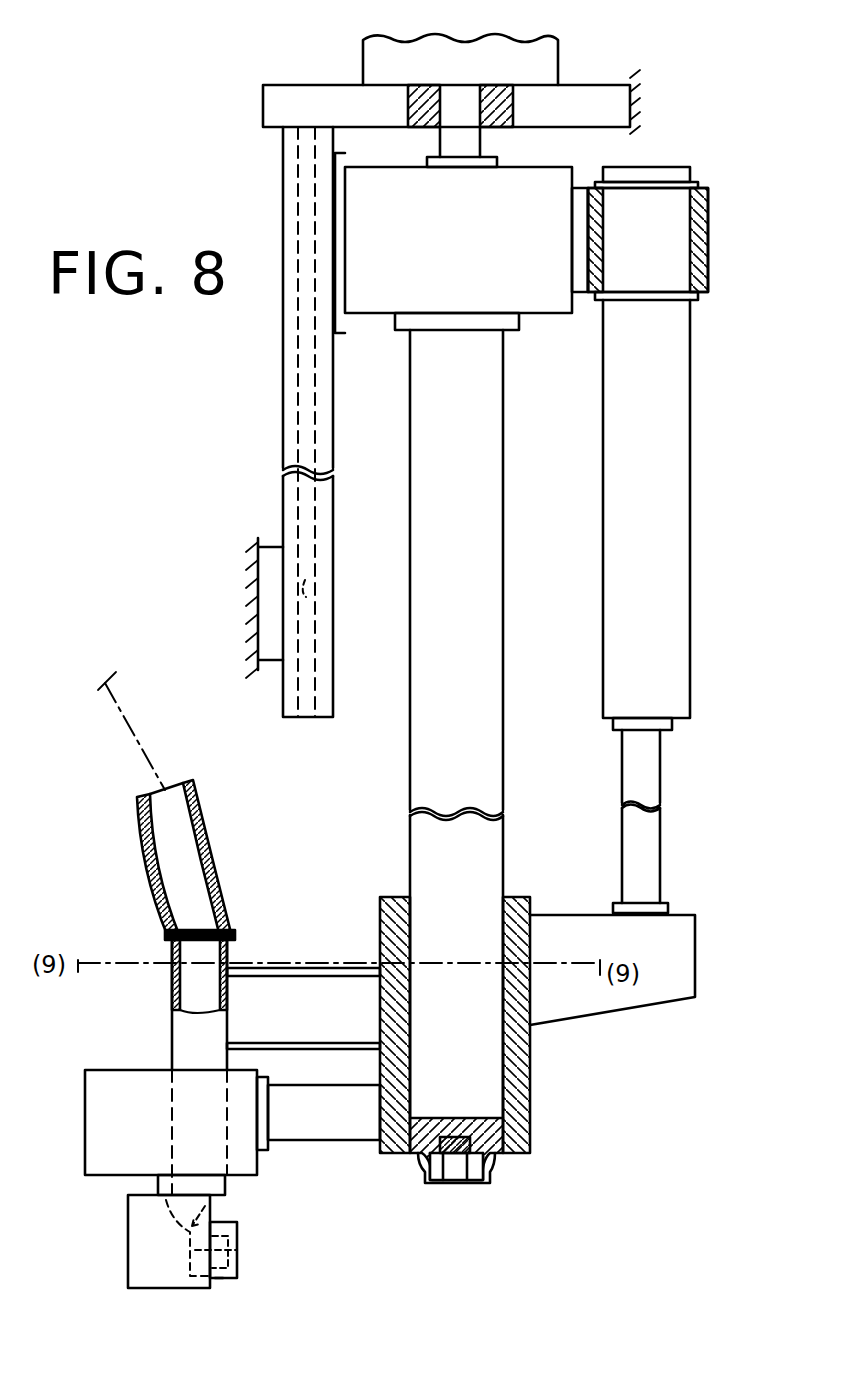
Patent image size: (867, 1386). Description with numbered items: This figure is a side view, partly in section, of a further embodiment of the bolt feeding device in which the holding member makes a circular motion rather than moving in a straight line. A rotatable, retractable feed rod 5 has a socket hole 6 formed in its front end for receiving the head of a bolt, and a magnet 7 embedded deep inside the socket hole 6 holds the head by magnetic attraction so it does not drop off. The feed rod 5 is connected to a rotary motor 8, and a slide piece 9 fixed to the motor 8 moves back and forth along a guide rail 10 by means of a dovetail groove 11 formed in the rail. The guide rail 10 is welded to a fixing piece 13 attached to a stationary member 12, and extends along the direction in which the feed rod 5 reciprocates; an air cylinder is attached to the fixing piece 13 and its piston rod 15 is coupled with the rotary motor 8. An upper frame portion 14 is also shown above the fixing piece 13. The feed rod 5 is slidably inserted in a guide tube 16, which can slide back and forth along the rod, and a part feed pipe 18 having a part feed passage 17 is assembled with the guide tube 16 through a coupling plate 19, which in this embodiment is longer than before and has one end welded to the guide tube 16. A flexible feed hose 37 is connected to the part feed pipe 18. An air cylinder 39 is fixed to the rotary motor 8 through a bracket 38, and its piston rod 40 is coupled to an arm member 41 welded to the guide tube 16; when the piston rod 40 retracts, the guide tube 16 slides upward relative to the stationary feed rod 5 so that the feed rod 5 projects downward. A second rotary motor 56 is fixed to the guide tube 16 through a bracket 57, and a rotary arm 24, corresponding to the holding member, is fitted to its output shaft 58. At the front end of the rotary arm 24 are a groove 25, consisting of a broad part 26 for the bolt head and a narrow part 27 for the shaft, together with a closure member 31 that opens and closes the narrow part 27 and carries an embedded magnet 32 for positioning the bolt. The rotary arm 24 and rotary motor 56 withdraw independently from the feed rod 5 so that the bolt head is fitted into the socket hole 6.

The feed rod 5 is at (410, 838).
The socket hole 6 is at (470, 1180).
The magnet 7 is at (457, 1137).
The rotary motor 8 is at (546, 314).
The slide piece 9 is at (345, 222).
The guide rail 10 is at (333, 520).
The dovetail groove 11 is at (306, 598).
The stationary member 12 is at (258, 598).
The fixing piece 13 is at (263, 101).
The upper frame 14 is at (363, 66).
The piston rod 15 is at (490, 96).
The guide tube 16 is at (386, 897).
The part feed passage 17 is at (205, 999).
The part feed pipe 18 is at (172, 996).
The coupling plate 19 is at (320, 968).
The rotary arm 24 is at (128, 1265).
The groove 25 is at (208, 1220).
The broad part 26 is at (210, 1204).
The narrow part 27 is at (237, 1250).
The closure member 31 is at (222, 1280).
The magnet 32 is at (237, 1276).
The feed hose 37 is at (196, 826).
The bracket 38 is at (708, 244).
The air cylinder 39 is at (690, 456).
The piston rod 40 is at (660, 778).
The arm member 41 is at (695, 960).
The rotary motor 56 is at (85, 1122).
The bracket 57 is at (316, 1140).
The output shaft 58 is at (158, 1186).